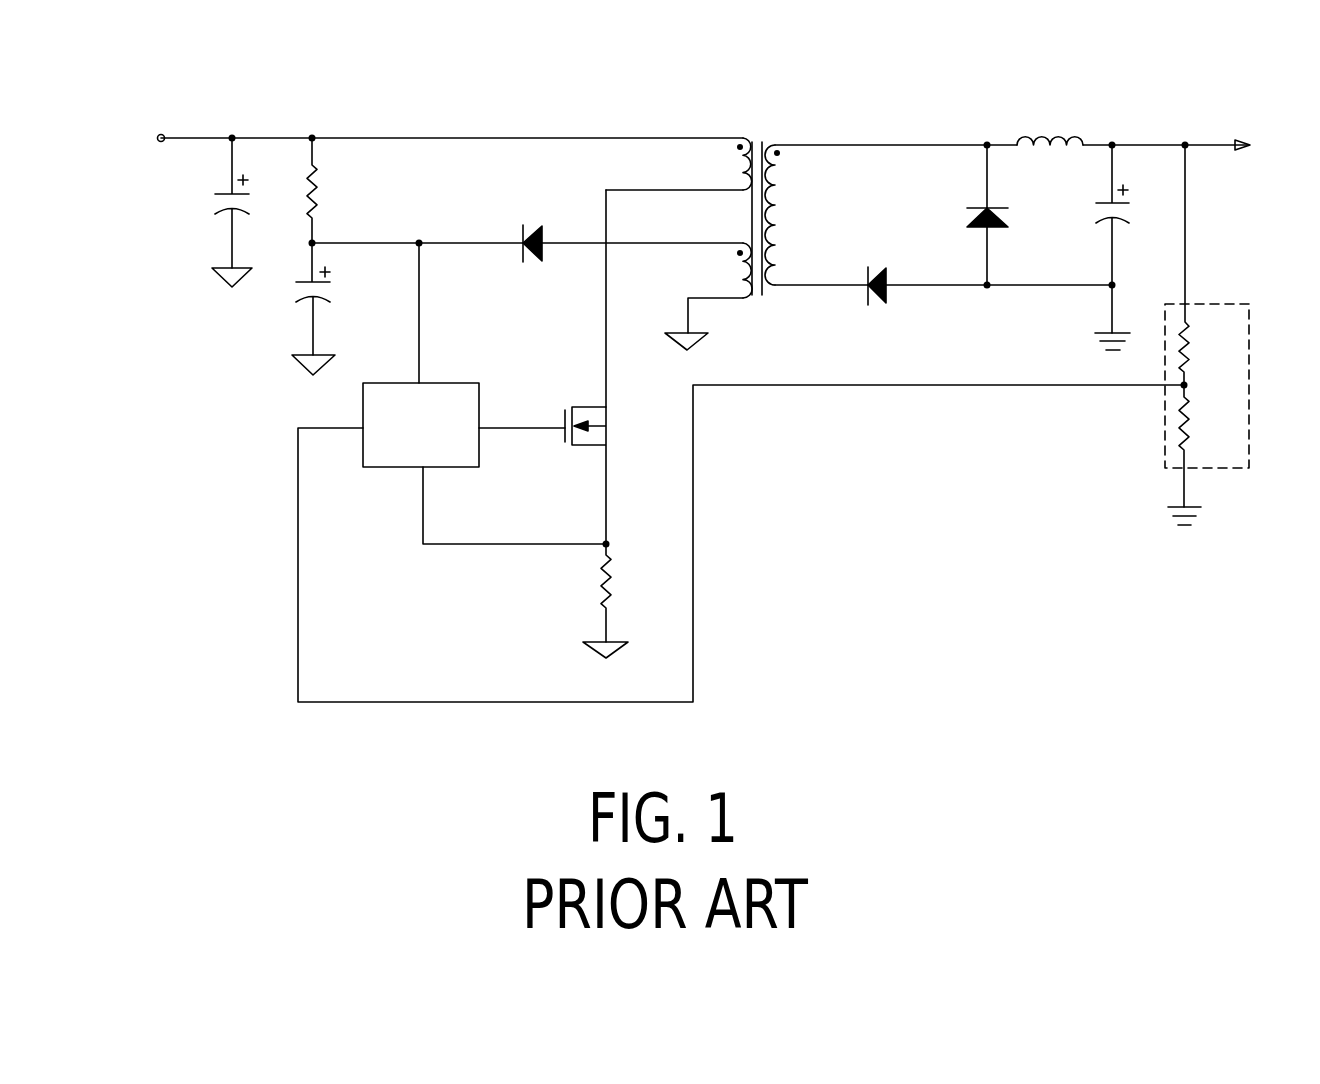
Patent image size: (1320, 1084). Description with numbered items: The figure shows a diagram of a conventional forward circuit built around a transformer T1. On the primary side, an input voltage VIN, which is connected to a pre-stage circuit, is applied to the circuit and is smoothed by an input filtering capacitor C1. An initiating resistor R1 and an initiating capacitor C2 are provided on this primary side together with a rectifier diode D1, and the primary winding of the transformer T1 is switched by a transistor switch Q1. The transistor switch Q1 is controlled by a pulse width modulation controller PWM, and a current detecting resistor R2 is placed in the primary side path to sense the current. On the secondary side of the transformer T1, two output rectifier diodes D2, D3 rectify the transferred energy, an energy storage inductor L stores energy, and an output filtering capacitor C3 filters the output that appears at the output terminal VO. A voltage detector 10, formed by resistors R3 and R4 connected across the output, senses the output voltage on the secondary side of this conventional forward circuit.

The input voltage VIN is at (135, 138).
The output voltage terminal VO is at (1264, 145).
The input filtering capacitor C1 is at (214, 212).
The initiating resistor R1 is at (296, 190).
The initiating capacitor C2 is at (303, 309).
The rectifier diode D1 is at (534, 223).
The transformer T1 is at (720, 224).
The output rectifier diode D2 is at (869, 265).
The output rectifier diode D3 is at (972, 215).
The energy storage inductor L is at (1050, 121).
The output filtering capacitor C3 is at (1121, 247).
The voltage detector 10 is at (1248, 382).
The resistor R3 is at (1205, 265).
The resistor R4 is at (1200, 455).
The pulse width modulation controller PWM is at (421, 425).
The transistor switch Q1 is at (605, 475).
The current detecting resistor R2 is at (597, 601).